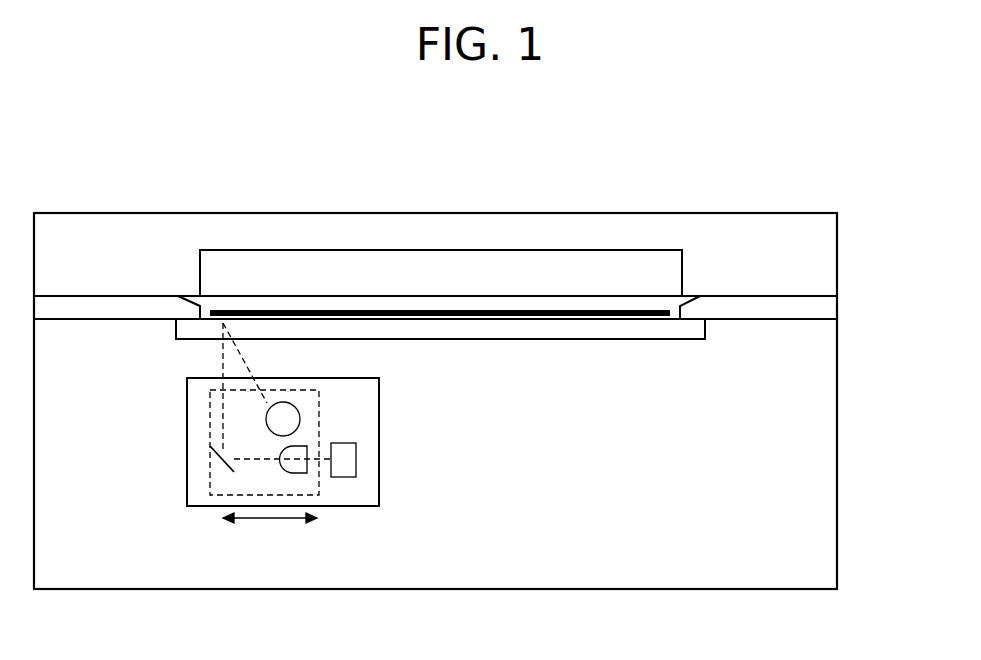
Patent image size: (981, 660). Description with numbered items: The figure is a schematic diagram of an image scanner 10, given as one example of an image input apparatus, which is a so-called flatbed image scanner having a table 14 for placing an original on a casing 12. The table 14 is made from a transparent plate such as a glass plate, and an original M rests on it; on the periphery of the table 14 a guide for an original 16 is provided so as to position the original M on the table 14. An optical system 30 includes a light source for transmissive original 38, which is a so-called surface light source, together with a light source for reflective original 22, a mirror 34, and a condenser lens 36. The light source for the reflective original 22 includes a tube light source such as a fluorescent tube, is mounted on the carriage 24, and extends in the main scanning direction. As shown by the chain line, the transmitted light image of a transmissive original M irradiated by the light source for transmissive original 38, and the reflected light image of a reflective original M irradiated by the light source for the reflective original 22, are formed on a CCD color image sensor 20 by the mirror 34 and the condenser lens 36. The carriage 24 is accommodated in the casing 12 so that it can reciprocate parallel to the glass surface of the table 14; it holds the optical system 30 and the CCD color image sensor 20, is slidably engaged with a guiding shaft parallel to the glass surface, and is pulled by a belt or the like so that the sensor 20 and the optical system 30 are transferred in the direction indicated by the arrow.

The image scanner 10 is at (384, 178).
The casing 12 is at (837, 396).
The table for placing an original 14 is at (680, 333).
The guide for an original 16 is at (124, 304).
The light source for transmissive original 38 is at (533, 268).
The original M is at (622, 310).
The CCD color image sensor 20 is at (356, 460).
The light source for reflective original 22 is at (300, 419).
The carriage 24 is at (201, 507).
The optical system 30 is at (210, 414).
The mirror 34 is at (210, 458).
The condenser lens 36 is at (300, 470).